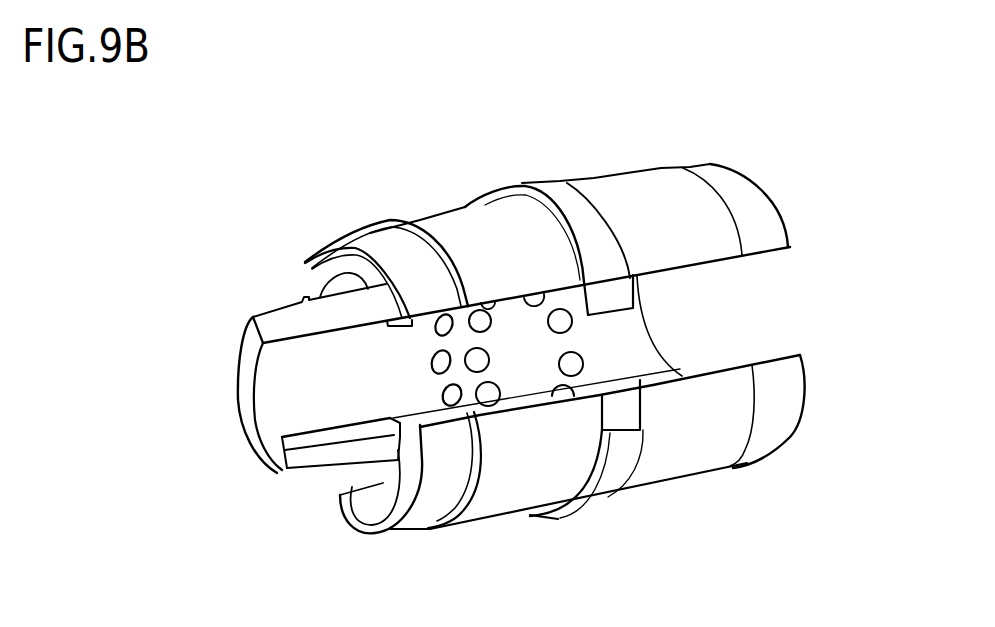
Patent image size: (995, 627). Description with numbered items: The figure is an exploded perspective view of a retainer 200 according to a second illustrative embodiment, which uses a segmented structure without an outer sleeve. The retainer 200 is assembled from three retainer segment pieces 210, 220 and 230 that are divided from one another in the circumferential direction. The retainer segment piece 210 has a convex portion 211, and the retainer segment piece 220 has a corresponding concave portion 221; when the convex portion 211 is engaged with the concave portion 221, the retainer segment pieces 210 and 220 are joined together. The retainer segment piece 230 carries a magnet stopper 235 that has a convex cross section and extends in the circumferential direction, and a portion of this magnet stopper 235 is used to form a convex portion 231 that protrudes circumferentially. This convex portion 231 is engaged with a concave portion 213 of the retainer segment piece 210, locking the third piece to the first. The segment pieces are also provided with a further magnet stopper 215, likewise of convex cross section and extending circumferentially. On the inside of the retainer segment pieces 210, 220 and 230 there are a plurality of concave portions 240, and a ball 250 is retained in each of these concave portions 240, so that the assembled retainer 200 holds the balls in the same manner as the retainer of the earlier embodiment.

The retainer 200 is at (776, 164).
The retainer segment piece 210 is at (703, 447).
The convex portion 211 is at (342, 490).
The concave portion 213 is at (620, 397).
The magnet stopper 215 is at (603, 493).
The retainer segment piece 220 is at (248, 375).
The concave portion 221 is at (303, 478).
The retainer segment piece 230 is at (631, 195).
The convex portion 231 is at (620, 297).
The magnet stopper 235 is at (553, 190).
The concave portions 240 is at (440, 362).
The ball 250 is at (483, 367).